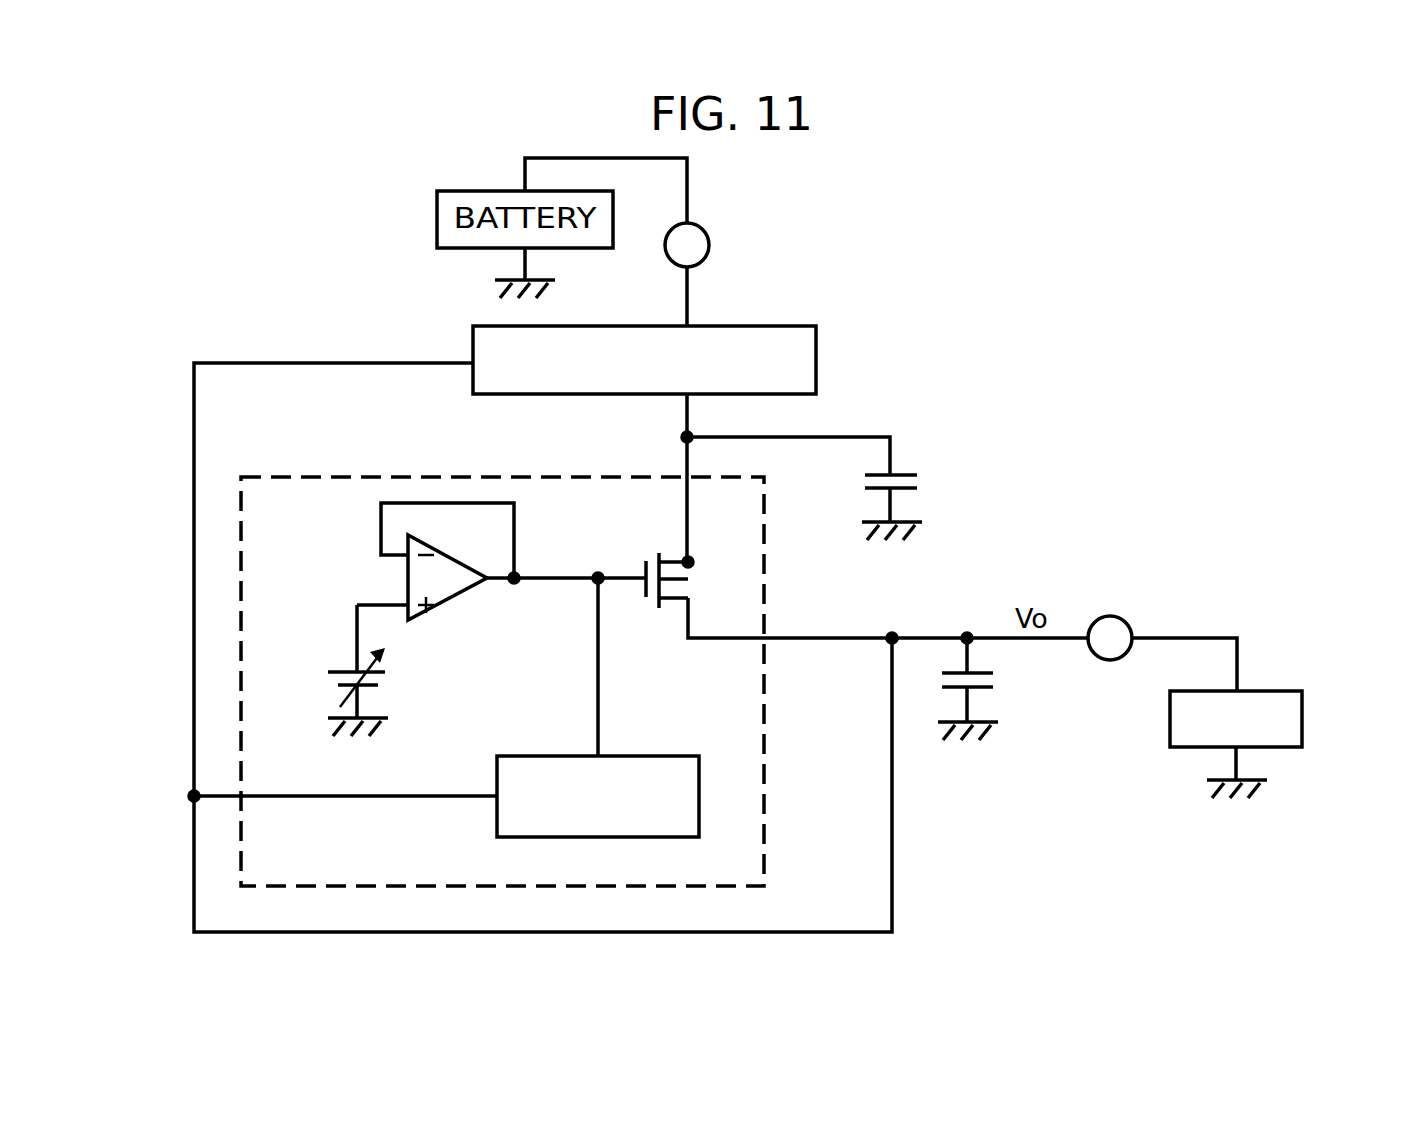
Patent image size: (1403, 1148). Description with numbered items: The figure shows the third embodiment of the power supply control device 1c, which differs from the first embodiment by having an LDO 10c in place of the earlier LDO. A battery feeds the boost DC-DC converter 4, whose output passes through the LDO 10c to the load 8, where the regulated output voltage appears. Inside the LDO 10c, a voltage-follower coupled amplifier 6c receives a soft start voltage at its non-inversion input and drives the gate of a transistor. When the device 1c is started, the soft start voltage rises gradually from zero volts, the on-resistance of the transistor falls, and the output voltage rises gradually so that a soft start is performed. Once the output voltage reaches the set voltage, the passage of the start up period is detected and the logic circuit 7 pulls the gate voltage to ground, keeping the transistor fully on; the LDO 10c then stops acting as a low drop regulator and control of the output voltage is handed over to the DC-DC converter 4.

The power supply control device 1c is at (1080, 202).
The boost DC-DC converter 4 is at (816, 360).
The amplifier 6c is at (442, 600).
The logic circuit 7 is at (642, 837).
The load 8 is at (1302, 705).
The LDO 10c is at (764, 583).